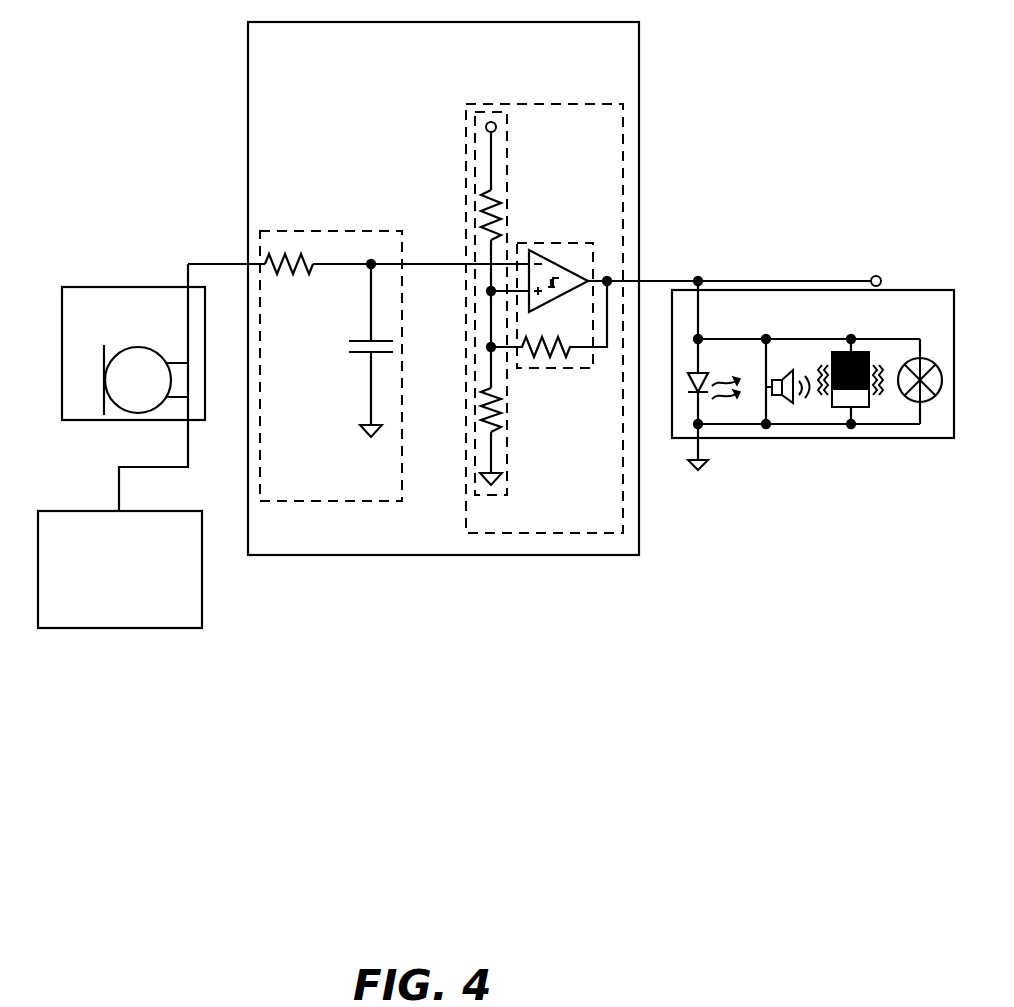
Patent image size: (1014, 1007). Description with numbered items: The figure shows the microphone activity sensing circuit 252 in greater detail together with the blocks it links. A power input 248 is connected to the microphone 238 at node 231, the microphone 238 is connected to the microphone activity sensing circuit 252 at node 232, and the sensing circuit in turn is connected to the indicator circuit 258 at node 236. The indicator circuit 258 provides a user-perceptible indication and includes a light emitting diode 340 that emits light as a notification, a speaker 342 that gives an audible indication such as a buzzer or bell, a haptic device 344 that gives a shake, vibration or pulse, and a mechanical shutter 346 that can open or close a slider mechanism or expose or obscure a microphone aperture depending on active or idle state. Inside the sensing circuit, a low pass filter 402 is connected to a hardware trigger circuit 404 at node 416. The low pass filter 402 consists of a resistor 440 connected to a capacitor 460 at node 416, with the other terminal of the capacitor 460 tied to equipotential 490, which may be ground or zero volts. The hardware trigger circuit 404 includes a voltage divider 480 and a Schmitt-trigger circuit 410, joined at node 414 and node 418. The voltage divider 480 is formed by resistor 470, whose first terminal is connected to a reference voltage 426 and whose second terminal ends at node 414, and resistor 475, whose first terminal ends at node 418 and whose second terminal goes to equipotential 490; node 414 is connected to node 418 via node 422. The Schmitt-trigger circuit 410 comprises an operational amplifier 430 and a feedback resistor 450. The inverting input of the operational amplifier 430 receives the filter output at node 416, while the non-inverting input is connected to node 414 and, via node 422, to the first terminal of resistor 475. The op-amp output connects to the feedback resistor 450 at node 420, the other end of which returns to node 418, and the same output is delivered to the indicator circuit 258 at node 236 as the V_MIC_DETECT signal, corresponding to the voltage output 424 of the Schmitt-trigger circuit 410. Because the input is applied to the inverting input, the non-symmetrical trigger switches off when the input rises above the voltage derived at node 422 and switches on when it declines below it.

The node 231 is at (119, 467).
The node 232 is at (236, 240).
The node 236 is at (704, 273).
The microphone 238 is at (133, 353).
The power input 248 is at (120, 569).
The microphone activity sensing circuit 252 is at (443, 288).
The indicator circuit 258 is at (813, 364).
The light emitting diode 340 is at (712, 395).
The speaker 342 is at (790, 402).
The haptic device 344 is at (866, 408).
The mechanical shutter 346 is at (930, 402).
The low pass filter 402 is at (336, 210).
The hardware trigger circuit 404 is at (465, 121).
The Schmitt-trigger circuit 410 is at (594, 370).
The node 414 is at (491, 291).
The node 416 is at (410, 264).
The node 418 is at (490, 350).
The node 420 is at (607, 273).
The node 422 is at (491, 347).
The voltage output 424 is at (877, 273).
The reference voltage 426 is at (497, 128).
The operational amplifier 430 is at (546, 251).
The resistor 440 is at (296, 276).
The feedback resistor 450 is at (536, 355).
The capacitor 460 is at (352, 361).
The resistor 470 is at (487, 198).
The resistor 475 is at (496, 432).
The voltage divider 480 is at (492, 486).
The equipotential 490 is at (374, 438).